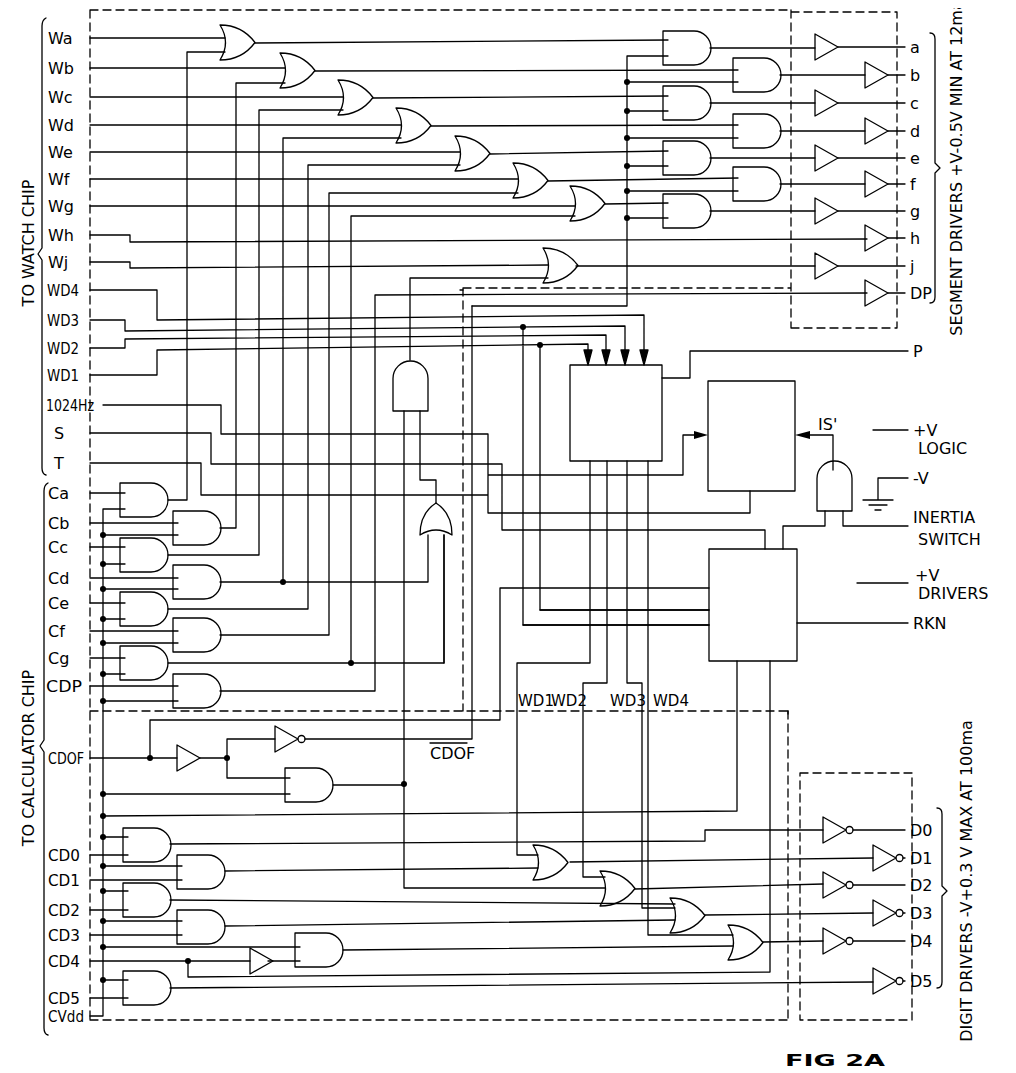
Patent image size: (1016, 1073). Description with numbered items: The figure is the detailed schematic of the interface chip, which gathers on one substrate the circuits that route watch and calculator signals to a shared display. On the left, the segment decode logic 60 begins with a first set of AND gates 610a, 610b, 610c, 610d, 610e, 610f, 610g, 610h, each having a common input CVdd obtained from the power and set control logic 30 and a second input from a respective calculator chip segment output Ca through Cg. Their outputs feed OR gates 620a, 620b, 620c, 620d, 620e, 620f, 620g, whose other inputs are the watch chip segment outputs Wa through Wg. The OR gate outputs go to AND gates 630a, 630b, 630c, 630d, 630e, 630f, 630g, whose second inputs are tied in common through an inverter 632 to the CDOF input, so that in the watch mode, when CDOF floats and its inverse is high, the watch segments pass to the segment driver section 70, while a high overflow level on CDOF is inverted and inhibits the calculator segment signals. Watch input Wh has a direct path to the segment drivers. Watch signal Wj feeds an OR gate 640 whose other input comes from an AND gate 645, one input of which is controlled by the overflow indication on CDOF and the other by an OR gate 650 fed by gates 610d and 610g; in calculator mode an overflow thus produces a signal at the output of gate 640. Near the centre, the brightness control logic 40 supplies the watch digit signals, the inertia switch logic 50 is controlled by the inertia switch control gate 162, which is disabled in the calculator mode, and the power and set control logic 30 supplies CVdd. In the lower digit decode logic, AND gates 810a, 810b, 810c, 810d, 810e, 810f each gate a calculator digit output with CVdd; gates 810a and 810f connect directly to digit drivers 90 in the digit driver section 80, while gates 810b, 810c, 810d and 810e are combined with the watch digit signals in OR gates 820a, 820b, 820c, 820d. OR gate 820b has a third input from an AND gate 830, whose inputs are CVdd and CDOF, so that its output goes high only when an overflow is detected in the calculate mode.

The OR gate 620a is at (254, 35).
The OR gate 620b is at (313, 63).
The OR gate 620c is at (371, 90).
The OR gate 620d is at (429, 118).
The OR gate 620e is at (488, 146).
The OR gate 620f is at (546, 173).
The OR gate 620g is at (567, 221).
The AND gate 630a is at (687, 48).
The AND gate 630b is at (757, 75).
The AND gate 630c is at (687, 103).
The AND gate 630d is at (757, 131).
The AND gate 630e is at (687, 158).
The AND gate 630f is at (757, 184).
The AND gate 630g is at (687, 211).
The OR gate 640 is at (577, 257).
The AND gate 645 is at (410, 386).
The OR gate 650 is at (452, 525).
The segment logic 60 is at (676, 306).
The segment drivers 70 is at (791, 313).
The brightness control logic 40 is at (570, 382).
The inertia switch logic 50 is at (795, 397).
The inertia switch control gate 162 is at (834, 486).
The power and set control logic 30 is at (797, 568).
The AND gate 610a is at (144, 500).
The AND gate 610b is at (197, 528).
The AND gate 610c is at (144, 555).
The AND gate 610d is at (197, 582).
The AND gate 610e is at (144, 609).
The AND gate 610f is at (197, 635).
The AND gate 610g is at (144, 663).
The AND gate 610h is at (197, 691).
The inverter 632 is at (302, 745).
The AND gate 830 is at (309, 785).
The AND gate 810a is at (147, 845).
The AND gate 810b is at (201, 872).
The AND gate 810c is at (147, 900).
The AND gate 810d is at (201, 927).
The AND gate 810e is at (319, 950).
The AND gate 810f is at (147, 988).
The OR gate 820a is at (533, 864).
The OR gate 820b is at (600, 893).
The OR gate 820c is at (700, 905).
The OR gate 820d is at (728, 950).
The digit driver section 80 is at (783, 710).
The digit drivers 90 is at (868, 776).